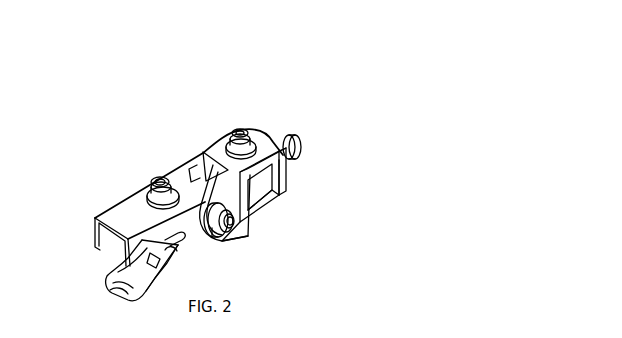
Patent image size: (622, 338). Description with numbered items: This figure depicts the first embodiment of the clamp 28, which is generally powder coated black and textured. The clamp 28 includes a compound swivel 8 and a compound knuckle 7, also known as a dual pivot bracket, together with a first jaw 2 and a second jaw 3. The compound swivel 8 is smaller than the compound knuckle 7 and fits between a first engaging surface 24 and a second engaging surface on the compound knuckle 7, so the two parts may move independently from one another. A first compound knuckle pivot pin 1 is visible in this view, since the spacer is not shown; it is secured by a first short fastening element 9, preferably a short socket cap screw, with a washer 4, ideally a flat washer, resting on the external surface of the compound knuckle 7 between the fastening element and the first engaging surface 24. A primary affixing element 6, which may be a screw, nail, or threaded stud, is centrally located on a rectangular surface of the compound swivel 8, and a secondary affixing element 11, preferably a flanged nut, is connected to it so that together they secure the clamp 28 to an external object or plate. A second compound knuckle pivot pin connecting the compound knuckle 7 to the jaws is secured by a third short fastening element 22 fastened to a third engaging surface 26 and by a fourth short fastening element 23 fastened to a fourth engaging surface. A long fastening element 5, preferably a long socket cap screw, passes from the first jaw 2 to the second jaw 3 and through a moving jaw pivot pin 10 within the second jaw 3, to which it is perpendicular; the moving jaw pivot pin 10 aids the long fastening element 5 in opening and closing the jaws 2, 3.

The first compound knuckle pivot pin 1 is at (262, 190).
The first jaw 2 is at (115, 203).
The second jaw 3 is at (118, 293).
The washer 4 is at (147, 170).
The long fastening element 5 is at (153, 170).
The primary affixing element 6 is at (286, 154).
The compound knuckle 7 is at (267, 195).
The compound swivel 8 is at (284, 182).
The first short fastening element 9 is at (243, 130).
The moving jaw pivot pin 10 is at (143, 284).
The secondary affixing element 11 is at (290, 163).
The third short fastening element 22 is at (233, 230).
The fourth short fastening element 23 is at (160, 172).
The first engaging surface 24 is at (215, 130).
The third engaging surface 26 is at (206, 228).
The clamp 28 is at (351, 78).